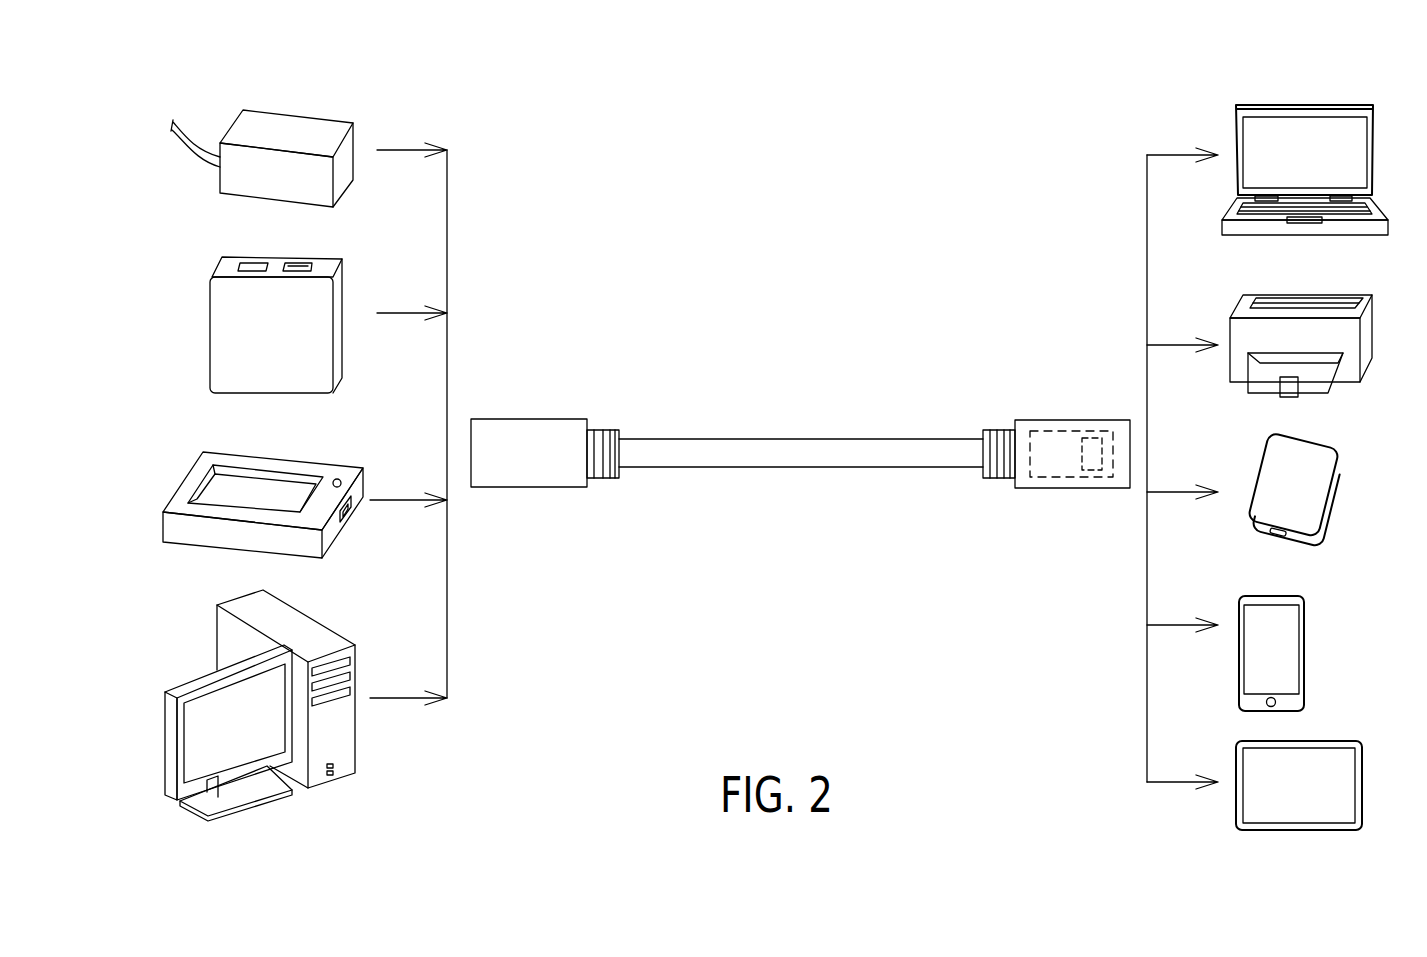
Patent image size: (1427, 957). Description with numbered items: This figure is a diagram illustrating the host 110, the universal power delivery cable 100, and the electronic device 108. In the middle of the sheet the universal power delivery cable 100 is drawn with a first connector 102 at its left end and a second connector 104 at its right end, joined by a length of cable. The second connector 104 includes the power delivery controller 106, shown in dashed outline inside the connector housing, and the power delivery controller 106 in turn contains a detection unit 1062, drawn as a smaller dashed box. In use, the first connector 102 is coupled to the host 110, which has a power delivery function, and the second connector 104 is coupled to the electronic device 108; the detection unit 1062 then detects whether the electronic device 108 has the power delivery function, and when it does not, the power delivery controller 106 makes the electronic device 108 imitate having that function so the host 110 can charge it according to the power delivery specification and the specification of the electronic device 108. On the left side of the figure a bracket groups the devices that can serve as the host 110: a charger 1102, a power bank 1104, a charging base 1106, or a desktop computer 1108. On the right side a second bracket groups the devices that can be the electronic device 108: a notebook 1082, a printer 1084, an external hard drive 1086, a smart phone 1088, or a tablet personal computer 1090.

The universal power delivery cable 100 is at (800, 397).
The first connector 102 is at (528, 419).
The second connector 104 is at (1056, 453).
The power delivery controller 106 is at (1076, 490).
The detection unit 1062 is at (1090, 477).
The electronic device 108 is at (1103, 110).
The host 110 is at (499, 102).
The charger 1102 is at (303, 113).
The power bank 1104 is at (322, 257).
The charging base 1106 is at (307, 460).
The desktop computer 1108 is at (310, 610).
The notebook 1082 is at (1305, 105).
The printer 1084 is at (1303, 295).
The external hard drive 1086 is at (1322, 432).
The smart phone 1088 is at (1274, 596).
The tablet personal computer 1090 is at (1314, 741).